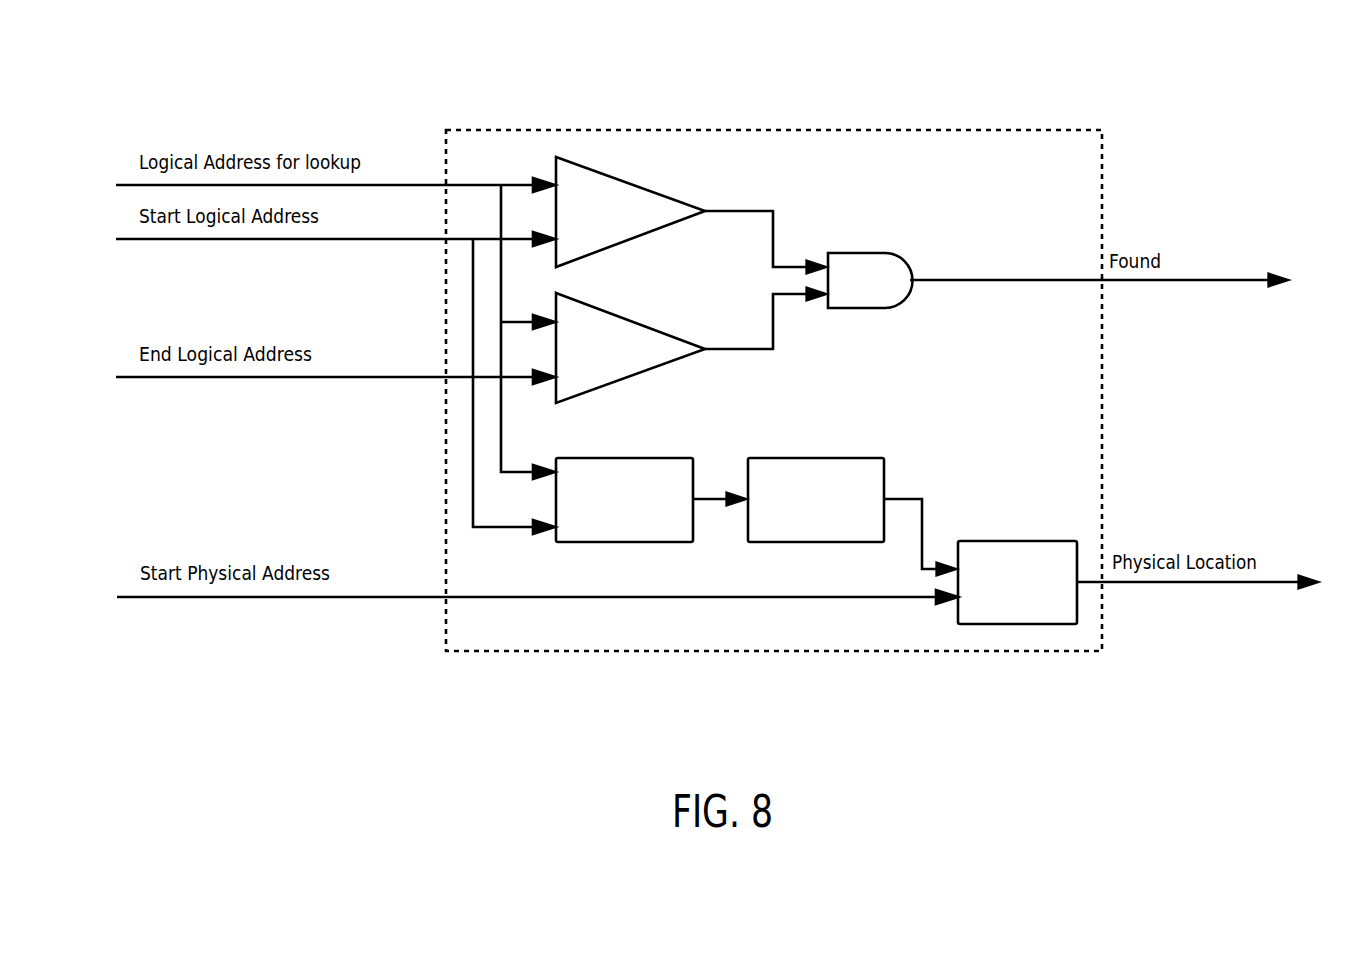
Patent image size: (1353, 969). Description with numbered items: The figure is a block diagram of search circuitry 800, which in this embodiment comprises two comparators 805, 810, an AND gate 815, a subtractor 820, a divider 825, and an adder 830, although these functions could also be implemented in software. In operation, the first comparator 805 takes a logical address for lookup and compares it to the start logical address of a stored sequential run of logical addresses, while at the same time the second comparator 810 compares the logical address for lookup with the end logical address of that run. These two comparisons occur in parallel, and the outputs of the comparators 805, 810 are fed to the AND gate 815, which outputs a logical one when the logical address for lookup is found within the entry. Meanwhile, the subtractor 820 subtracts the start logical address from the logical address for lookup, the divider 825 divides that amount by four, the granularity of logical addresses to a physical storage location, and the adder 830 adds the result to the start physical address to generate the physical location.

The search circuitry 800 is at (1093, 80).
The first comparator 805 is at (664, 189).
The second comparator 810 is at (664, 331).
The AND gate 815 is at (875, 253).
The subtractor 820 is at (664, 457).
The divider 825 is at (816, 457).
The adder 830 is at (1010, 541).